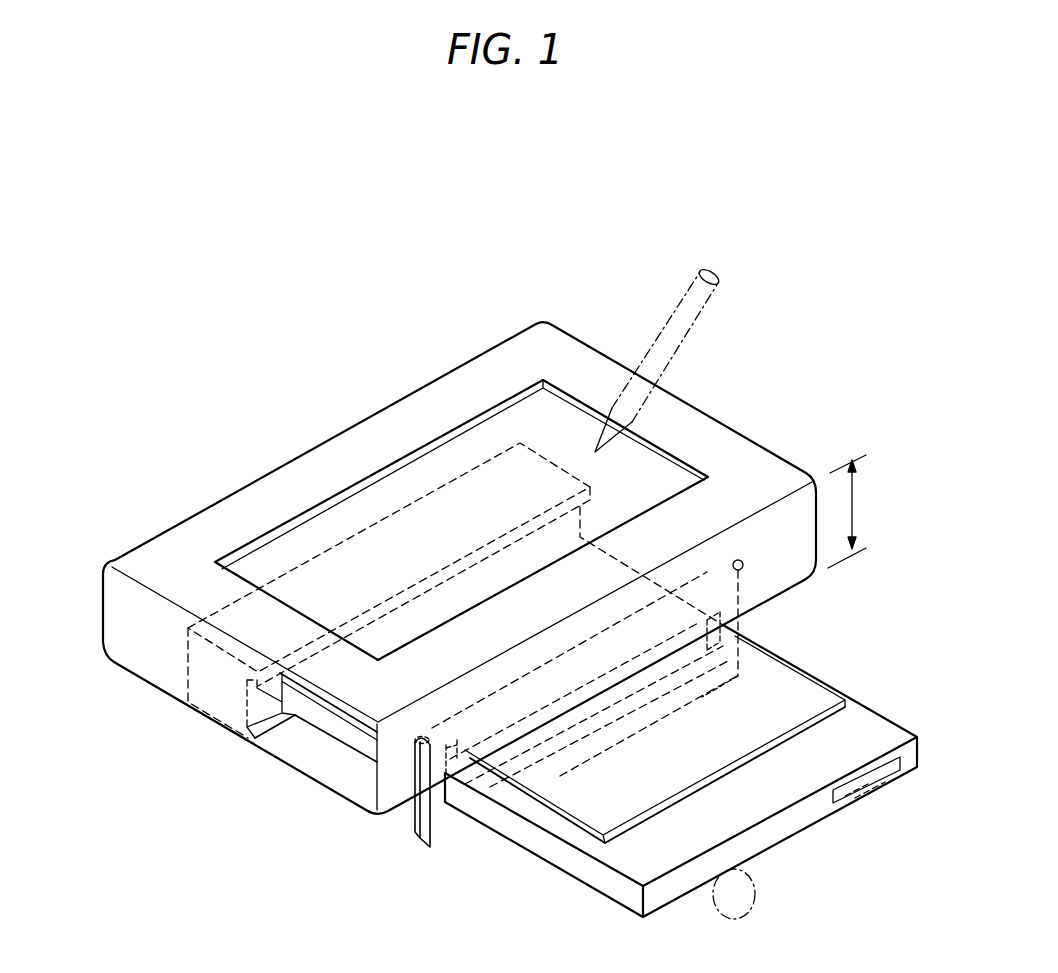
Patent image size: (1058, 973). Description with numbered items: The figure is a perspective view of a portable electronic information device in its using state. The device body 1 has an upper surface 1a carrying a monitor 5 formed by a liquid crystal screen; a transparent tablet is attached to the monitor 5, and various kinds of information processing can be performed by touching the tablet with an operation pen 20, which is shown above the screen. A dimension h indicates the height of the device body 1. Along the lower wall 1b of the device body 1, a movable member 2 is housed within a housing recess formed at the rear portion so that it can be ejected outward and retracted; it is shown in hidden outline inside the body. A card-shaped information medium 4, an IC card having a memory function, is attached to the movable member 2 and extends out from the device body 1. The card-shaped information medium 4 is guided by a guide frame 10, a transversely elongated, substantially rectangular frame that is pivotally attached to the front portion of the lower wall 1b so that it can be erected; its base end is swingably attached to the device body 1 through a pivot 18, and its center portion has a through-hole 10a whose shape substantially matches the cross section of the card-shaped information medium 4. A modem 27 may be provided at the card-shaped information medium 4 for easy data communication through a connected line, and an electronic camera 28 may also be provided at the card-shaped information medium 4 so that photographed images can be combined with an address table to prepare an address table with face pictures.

The device body 1 is at (152, 648).
The upper surface 1a is at (193, 543).
The lower wall 1b is at (163, 697).
The movable member 2 is at (222, 703).
The card-shaped information medium 4 is at (612, 880).
The monitor 5 is at (312, 540).
The guide frame 10 is at (443, 823).
The through-hole 10a is at (603, 718).
The pivot 18 is at (415, 740).
The operation pen 20 is at (690, 310).
The modem 27 is at (855, 788).
The electronic camera 28 is at (728, 905).
The height h is at (853, 511).